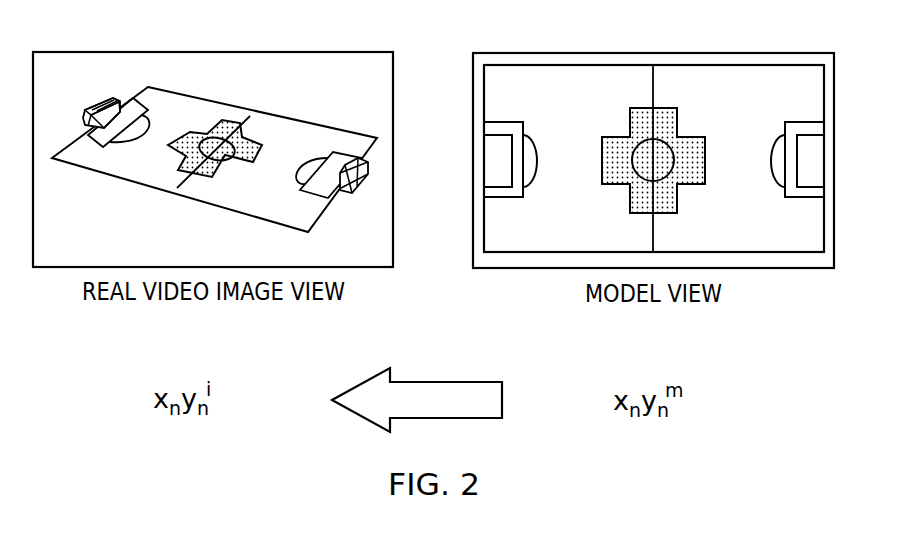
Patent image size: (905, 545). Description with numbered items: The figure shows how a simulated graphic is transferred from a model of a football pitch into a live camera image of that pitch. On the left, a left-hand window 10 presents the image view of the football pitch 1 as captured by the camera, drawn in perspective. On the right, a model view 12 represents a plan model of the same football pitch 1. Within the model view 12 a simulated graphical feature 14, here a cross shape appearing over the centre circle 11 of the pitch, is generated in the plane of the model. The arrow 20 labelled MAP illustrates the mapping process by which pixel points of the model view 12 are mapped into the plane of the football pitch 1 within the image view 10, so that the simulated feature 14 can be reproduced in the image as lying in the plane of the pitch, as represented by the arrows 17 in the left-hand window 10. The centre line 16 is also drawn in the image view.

The left-hand window 10 is at (277, 51).
The model view 12 is at (721, 52).
The football pitch 1 is at (246, 98).
The player position marker region 16 is at (252, 115).
The arrows 17 is at (166, 201).
The centre circle 11 is at (631, 132).
The simulated graphical feature 14 is at (679, 120).
The arrow 20 is at (456, 381).